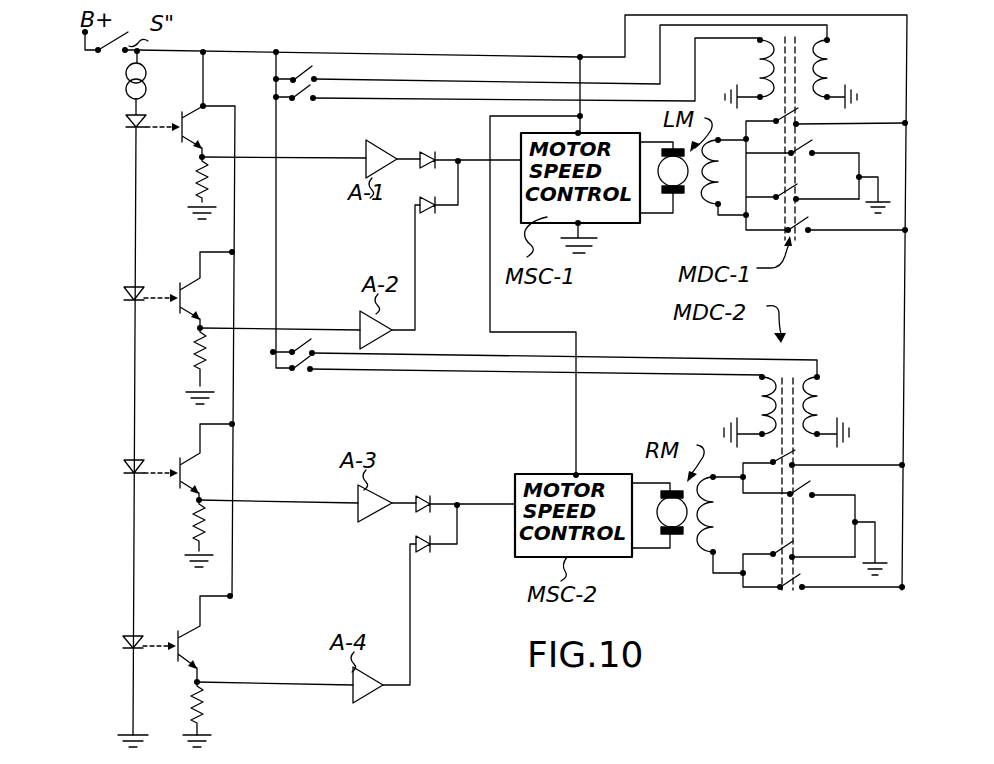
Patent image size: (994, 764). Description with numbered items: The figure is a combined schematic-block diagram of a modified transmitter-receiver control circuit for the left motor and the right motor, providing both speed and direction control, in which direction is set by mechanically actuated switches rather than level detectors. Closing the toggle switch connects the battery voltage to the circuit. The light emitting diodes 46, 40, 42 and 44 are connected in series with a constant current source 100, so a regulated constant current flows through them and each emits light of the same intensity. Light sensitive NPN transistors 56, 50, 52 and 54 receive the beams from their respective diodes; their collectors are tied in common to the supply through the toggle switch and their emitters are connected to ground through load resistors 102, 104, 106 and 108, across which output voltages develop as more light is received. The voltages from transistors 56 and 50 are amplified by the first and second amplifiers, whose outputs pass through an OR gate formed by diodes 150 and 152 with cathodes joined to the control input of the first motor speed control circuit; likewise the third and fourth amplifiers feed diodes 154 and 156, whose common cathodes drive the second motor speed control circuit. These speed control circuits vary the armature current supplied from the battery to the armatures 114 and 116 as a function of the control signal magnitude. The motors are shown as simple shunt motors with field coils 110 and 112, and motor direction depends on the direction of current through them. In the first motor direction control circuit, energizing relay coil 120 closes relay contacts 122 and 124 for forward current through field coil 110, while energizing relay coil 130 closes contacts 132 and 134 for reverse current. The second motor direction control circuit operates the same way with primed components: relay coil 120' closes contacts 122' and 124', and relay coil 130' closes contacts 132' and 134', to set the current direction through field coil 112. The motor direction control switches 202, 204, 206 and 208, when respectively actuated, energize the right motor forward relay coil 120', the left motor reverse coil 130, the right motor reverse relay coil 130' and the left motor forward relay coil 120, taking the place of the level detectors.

The constant current source 100 is at (128, 93).
The light emitting diode 46 is at (126, 131).
The load resistor 102 is at (207, 176).
The light sensitive NPN transistor 56 is at (245, 100).
The light emitting diode 40 is at (124, 300).
The light sensitive NPN transistor 50 is at (187, 302).
The load resistor 104 is at (204, 378).
The light emitting diode 42 is at (124, 474).
The light sensitive NPN transistor 52 is at (188, 476).
The load resistor 106 is at (203, 546).
The light emitting diode 44 is at (122, 646).
The light sensitive NPN transistor 54 is at (186, 646).
The load resistor 108 is at (201, 726).
The motor direction control switch 204 is at (315, 75).
The motor direction control switch 208 is at (301, 102).
The motor direction control switch 206 is at (314, 342).
The motor direction control switch 202 is at (300, 373).
The diode 150 is at (430, 152).
The diode 152 is at (438, 216).
The diode 154 is at (432, 496).
The diode 156 is at (432, 556).
The armature 114 is at (680, 180).
The armature 116 is at (680, 520).
The field coil 110 is at (718, 172).
The field coil 112 is at (720, 518).
The relay coil 120 is at (738, 72).
The relay coil 130 is at (849, 72).
The relay contact 122 is at (839, 129).
The relay contact 132 is at (823, 169).
The relay contact 124 is at (820, 205).
The relay contact 134 is at (845, 236).
The relay coil 120' is at (733, 410).
The relay coil 130' is at (845, 410).
The relay contact 122' is at (836, 470).
The relay contact 132' is at (821, 519).
The relay contact 124' is at (814, 562).
The relay contact 134' is at (839, 595).